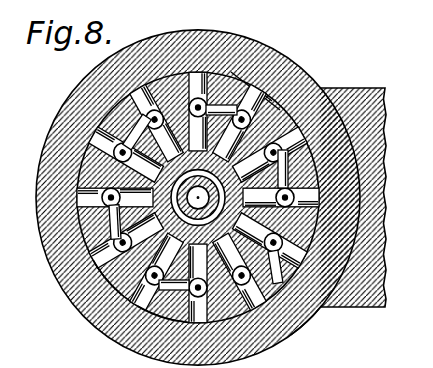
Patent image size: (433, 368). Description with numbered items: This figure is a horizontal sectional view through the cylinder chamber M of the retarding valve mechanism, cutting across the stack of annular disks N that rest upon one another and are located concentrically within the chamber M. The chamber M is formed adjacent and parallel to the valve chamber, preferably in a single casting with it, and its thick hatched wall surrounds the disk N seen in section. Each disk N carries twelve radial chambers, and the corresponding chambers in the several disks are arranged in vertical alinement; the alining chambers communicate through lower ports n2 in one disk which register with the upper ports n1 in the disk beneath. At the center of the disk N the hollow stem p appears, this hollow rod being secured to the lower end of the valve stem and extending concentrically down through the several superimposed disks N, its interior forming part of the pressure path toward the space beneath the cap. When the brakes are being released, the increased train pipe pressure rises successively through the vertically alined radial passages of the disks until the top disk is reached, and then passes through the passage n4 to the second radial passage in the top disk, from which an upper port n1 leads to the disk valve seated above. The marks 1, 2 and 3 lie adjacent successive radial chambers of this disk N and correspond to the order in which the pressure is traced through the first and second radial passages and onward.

The piston 1 is at (318, 195).
The casing ring 2 is at (308, 168).
The rotor 3 is at (278, 112).
The cylinder chamber M is at (258, 90).
The annular disks N is at (286, 95).
The hollow stem p is at (103, 280).
The upper ports n1 is at (304, 309).
The lower ports n2 is at (165, 313).
The passage n4 is at (231, 72).